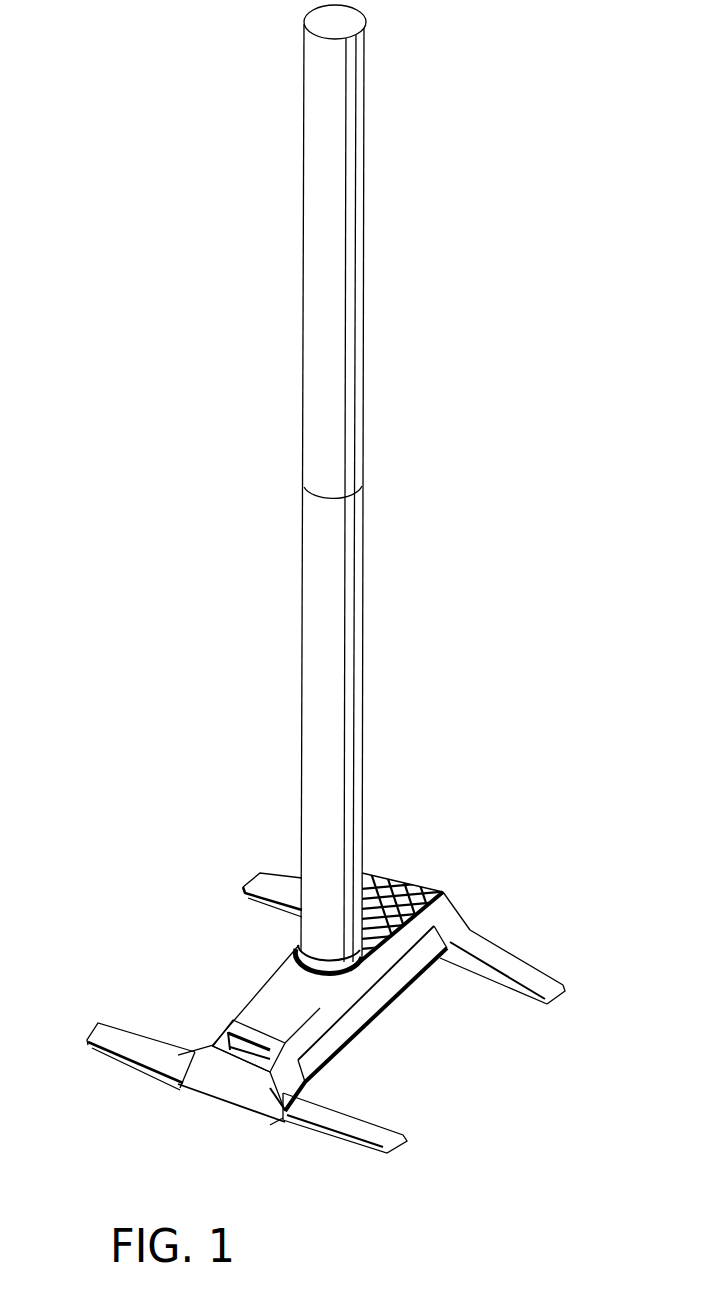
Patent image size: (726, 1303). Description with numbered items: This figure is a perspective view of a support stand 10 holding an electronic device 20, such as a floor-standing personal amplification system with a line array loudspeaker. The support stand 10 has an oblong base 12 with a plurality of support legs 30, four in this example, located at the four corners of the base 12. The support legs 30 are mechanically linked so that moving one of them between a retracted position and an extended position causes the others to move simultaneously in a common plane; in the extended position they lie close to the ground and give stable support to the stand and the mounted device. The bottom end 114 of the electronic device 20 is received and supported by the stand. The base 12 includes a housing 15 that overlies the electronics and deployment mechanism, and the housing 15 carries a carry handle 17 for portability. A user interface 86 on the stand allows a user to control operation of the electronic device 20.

The support stand 10 is at (176, 885).
The base 12 is at (415, 994).
The housing 15 is at (245, 1000).
The carry handle 17 is at (243, 1053).
The electronic device 20 is at (374, 171).
The support legs 30 is at (268, 880).
The user interface 86 is at (412, 886).
The bottom end 114 is at (314, 951).